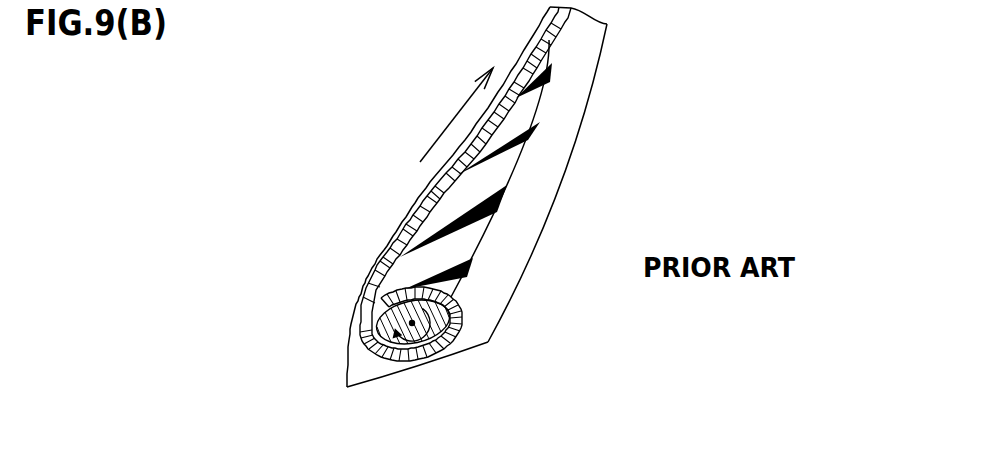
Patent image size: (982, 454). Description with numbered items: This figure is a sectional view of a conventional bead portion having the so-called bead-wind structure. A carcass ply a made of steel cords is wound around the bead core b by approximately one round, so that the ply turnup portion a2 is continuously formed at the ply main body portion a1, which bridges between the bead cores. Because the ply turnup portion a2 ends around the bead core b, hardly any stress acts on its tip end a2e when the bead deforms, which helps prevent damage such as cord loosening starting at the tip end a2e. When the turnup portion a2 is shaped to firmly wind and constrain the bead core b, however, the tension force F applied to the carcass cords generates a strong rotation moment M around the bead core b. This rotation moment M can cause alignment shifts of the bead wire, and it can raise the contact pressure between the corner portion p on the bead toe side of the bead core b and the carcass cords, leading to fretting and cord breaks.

The tension force F is at (455, 110).
The carcass ply a is at (296, 190).
The ply main body portion a1 is at (423, 198).
The ply turnup portion a2 is at (383, 247).
The tip end a2e is at (365, 305).
The bead core b is at (445, 319).
The rotation moment M is at (420, 348).
The corner portion p is at (352, 344).